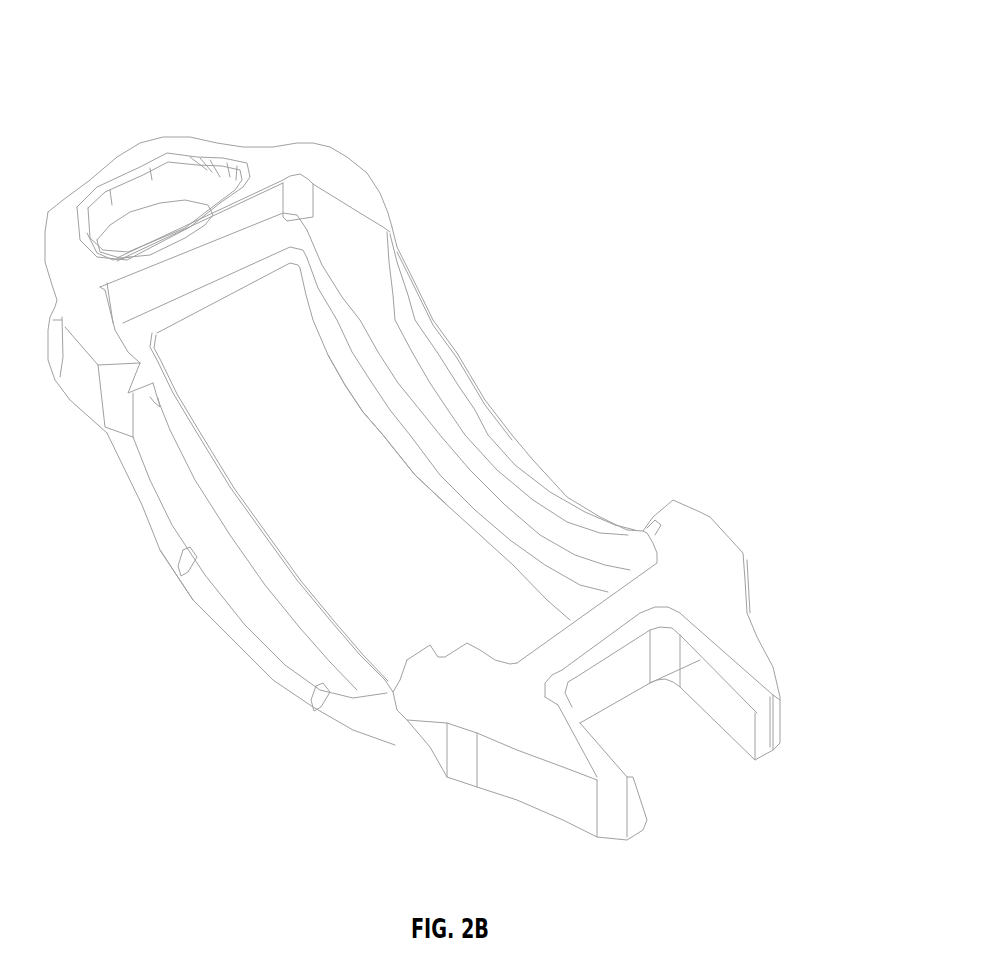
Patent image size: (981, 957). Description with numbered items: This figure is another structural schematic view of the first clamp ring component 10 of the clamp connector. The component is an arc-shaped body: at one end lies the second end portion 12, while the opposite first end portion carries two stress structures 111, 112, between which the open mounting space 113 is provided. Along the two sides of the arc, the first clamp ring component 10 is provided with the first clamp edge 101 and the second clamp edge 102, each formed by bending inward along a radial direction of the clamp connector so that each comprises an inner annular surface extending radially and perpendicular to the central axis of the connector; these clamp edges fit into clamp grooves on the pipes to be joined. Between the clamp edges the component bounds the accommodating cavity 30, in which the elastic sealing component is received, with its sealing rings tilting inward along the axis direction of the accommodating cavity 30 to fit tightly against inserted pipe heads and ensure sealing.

The first clamp ring component 10 is at (351, 400).
The second end portion 12 is at (163, 130).
The first clamp edge 101 is at (488, 343).
The accommodating cavity 30 is at (458, 449).
The second clamp edge 102 is at (221, 629).
The stress structure 111 is at (494, 751).
The stress structure 112 is at (727, 630).
The open mounting space 113 is at (778, 760).